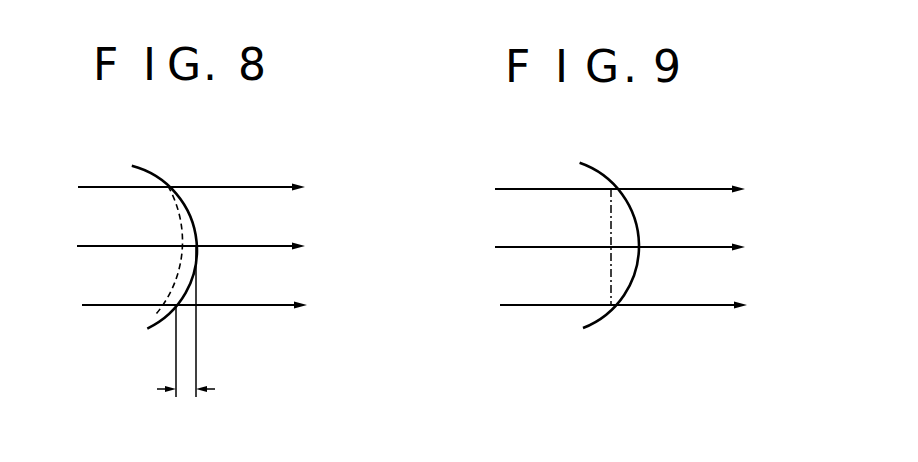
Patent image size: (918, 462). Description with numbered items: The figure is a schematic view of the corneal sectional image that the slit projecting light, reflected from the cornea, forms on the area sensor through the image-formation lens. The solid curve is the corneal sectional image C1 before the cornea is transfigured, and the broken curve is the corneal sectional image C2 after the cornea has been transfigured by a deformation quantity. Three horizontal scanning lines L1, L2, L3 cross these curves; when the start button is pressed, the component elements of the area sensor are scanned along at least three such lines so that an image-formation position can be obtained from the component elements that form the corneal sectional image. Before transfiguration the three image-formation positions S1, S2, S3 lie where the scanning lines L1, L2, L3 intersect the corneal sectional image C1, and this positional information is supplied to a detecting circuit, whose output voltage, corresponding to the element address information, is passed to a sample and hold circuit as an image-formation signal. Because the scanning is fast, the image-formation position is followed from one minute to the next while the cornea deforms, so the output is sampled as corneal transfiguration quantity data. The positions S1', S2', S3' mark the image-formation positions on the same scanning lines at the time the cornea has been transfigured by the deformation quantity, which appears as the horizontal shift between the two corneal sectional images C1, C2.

In FIG. 8, the scanning line L1 is at (115, 187).
In FIG. 9, the scanning line L1 is at (712, 189).
In FIG. 8, the scanning line L2 is at (283, 246).
In FIG. 9, the scanning line L2 is at (720, 247).
In FIG. 8, the scanning line L3 is at (275, 303).
In FIG. 9, the scanning line L3 is at (672, 307).
In FIG. 8, the corneal sectional image before transfiguration C1 is at (192, 225).
In FIG. 8, the corneal sectional image after transfiguration C2 is at (178, 272).
In FIG. 8, the image-formation position S1 is at (193, 160).
In FIG. 9, the image-formation position S1 is at (644, 166).
In FIG. 8, the image-formation position after transfiguration S1' is at (141, 210).
In FIG. 8, the image-formation position S2 is at (224, 226).
In FIG. 9, the image-formation position S2 is at (666, 225).
In FIG. 8, the image-formation position after transfiguration S2' is at (138, 267).
In FIG. 8, the image-formation position S3 is at (207, 324).
In FIG. 9, the image-formation position S3 is at (632, 330).
In FIG. 8, the image-formation position after transfiguration S3' is at (143, 341).